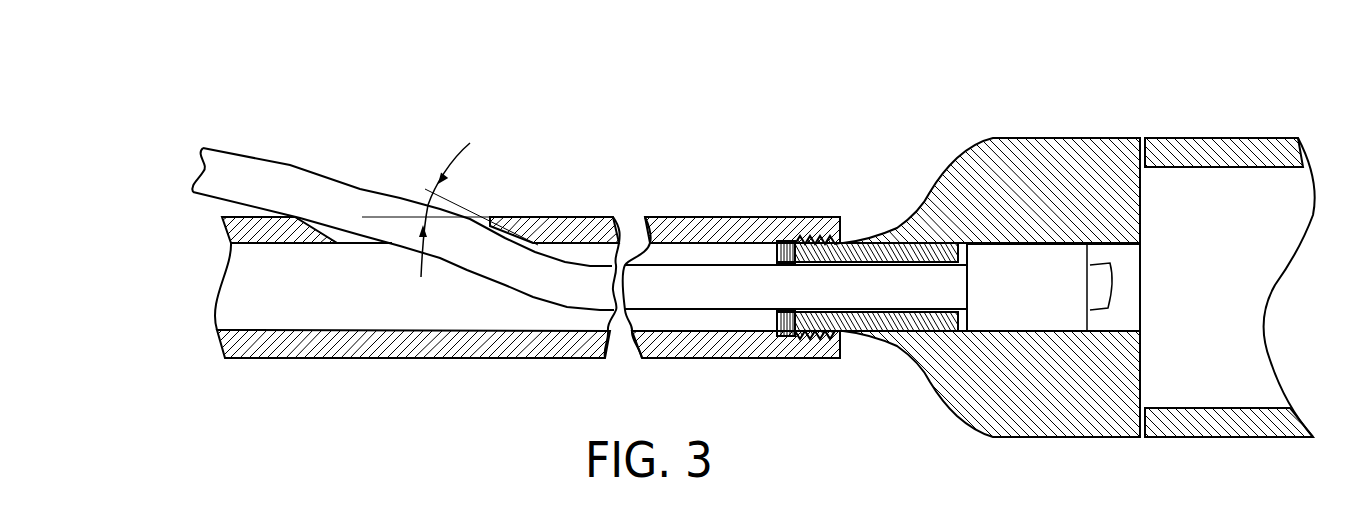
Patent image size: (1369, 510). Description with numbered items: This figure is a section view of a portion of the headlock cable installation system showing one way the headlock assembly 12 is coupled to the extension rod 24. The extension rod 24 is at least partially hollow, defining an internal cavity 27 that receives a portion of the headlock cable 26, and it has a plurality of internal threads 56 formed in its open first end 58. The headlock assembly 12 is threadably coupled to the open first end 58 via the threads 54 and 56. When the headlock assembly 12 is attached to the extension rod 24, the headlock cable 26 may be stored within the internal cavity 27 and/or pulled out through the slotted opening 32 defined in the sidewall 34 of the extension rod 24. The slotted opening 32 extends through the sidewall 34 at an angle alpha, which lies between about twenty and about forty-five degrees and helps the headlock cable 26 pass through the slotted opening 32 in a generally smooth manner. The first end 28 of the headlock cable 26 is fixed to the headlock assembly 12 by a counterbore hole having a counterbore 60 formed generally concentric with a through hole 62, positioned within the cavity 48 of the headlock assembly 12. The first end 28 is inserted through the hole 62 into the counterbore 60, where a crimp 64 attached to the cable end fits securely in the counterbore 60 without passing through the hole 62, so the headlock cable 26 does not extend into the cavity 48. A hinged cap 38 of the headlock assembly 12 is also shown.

The headlock assembly 12 is at (956, 137).
The extension rod 24 is at (517, 217).
The headlock cable 26 is at (287, 166).
The internal cavity 27 is at (414, 306).
The first end 28 is at (858, 364).
The slotted opening 32 is at (338, 245).
The sidewall 34 is at (567, 228).
The hinged cap 38 is at (1230, 138).
The cavity 48 is at (1210, 381).
The threads 54 is at (845, 243).
The internal threads 56 is at (778, 258).
The open first end 58 is at (817, 182).
The counterbore 60 is at (1107, 331).
The through hole 62 is at (903, 318).
The crimp 64 is at (1060, 262).
The angle α alpha is at (428, 190).